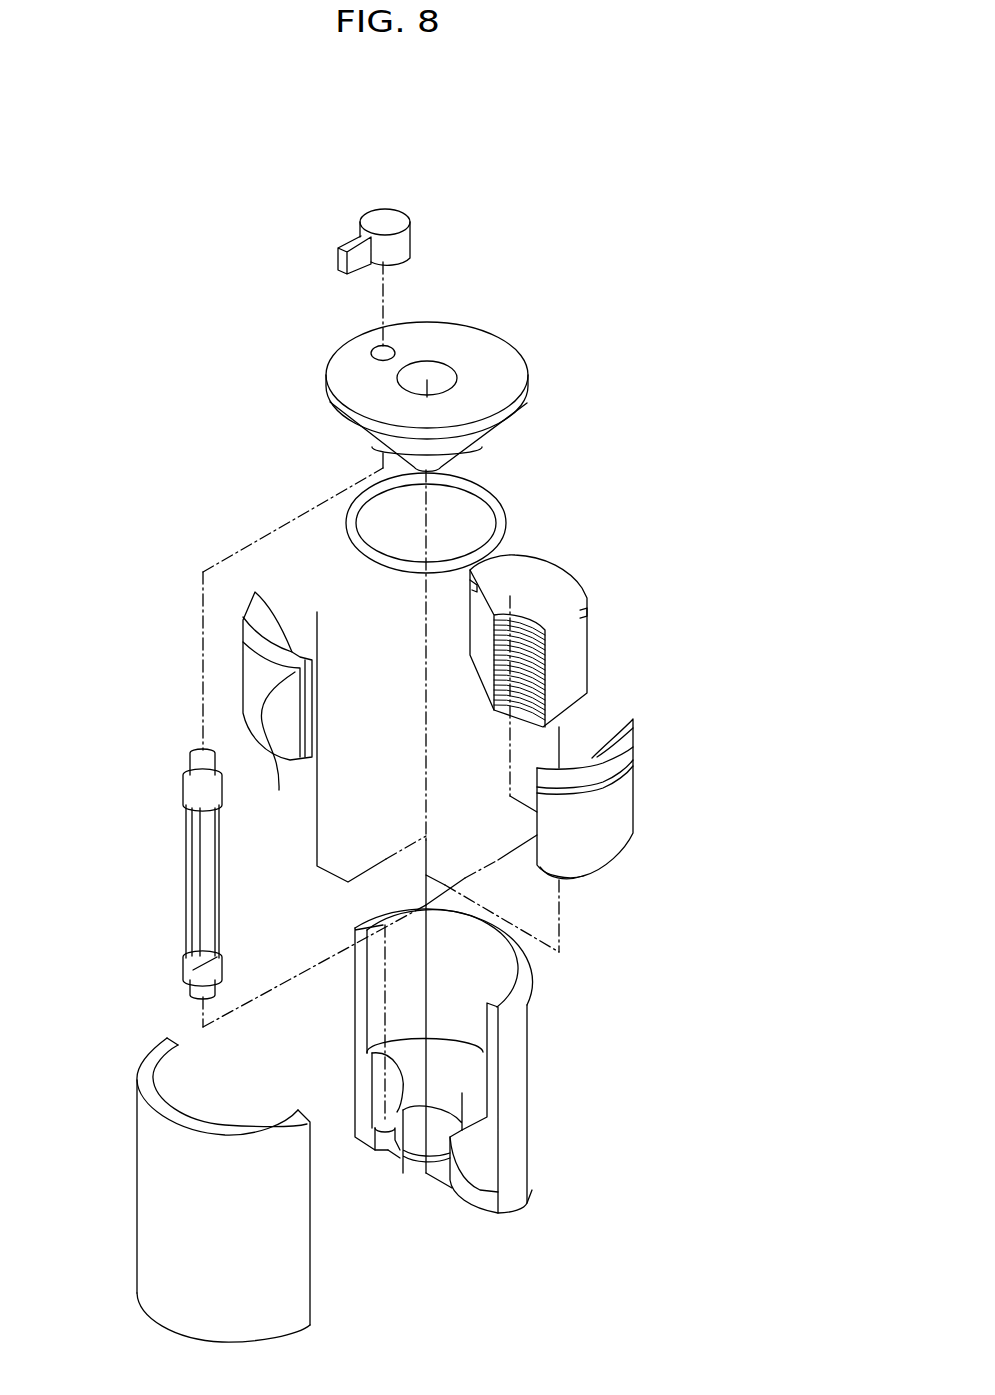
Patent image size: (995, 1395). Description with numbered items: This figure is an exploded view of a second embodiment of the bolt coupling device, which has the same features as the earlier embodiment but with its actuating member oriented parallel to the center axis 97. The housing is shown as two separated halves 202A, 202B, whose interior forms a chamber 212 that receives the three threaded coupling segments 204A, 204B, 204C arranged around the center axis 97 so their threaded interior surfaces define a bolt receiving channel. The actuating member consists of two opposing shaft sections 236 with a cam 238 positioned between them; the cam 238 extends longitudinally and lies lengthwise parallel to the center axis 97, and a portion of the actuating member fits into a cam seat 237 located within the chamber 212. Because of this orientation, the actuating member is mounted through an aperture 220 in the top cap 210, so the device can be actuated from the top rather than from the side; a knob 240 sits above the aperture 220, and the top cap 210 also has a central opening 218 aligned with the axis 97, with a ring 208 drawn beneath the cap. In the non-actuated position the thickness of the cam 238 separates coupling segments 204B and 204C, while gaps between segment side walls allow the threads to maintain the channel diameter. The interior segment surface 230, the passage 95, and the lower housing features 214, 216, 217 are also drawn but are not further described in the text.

The locking knob 240 is at (362, 212).
The aperture 220 is at (396, 352).
The central bore 218 is at (427, 381).
The top cap 210 is at (513, 374).
The O-ring seal 208 is at (497, 500).
The coupling segment 204A is at (252, 602).
The coupling segment 204B is at (587, 653).
The coupling segment 204C is at (633, 810).
The center axis 97 is at (426, 656).
The shaft section 236 is at (197, 752).
The cam 238 is at (187, 812).
The inner surface of segment 230 is at (274, 750).
The chamber 212 is at (477, 977).
The guide passage 95 is at (383, 977).
The housing half 202B is at (530, 1120).
The cam seat 237 is at (392, 1145).
The passage 217 is at (415, 1133).
The outlet tube 216 is at (470, 1150).
The lower wall 214 is at (498, 1175).
The housing half shell 202A is at (275, 1290).